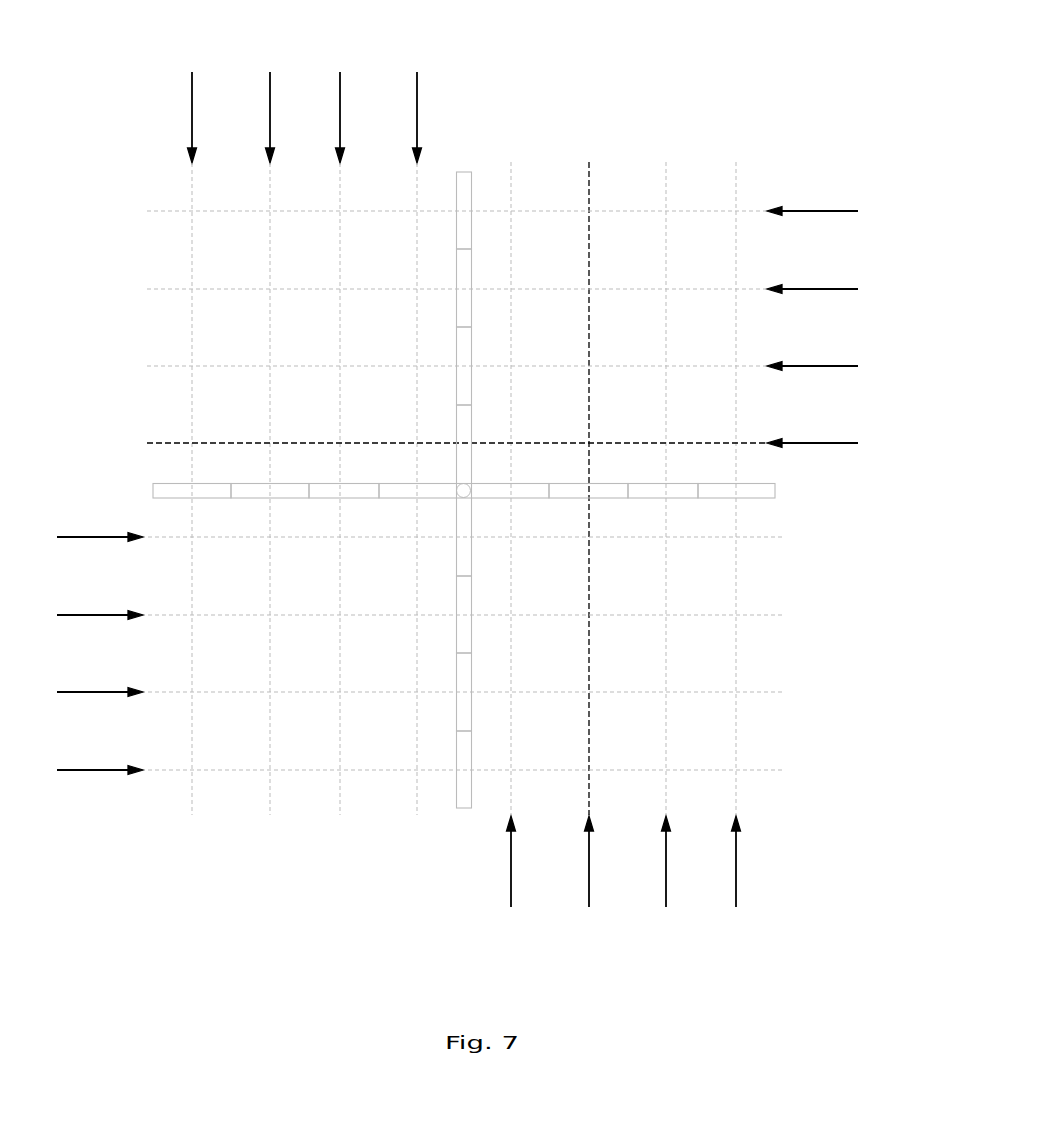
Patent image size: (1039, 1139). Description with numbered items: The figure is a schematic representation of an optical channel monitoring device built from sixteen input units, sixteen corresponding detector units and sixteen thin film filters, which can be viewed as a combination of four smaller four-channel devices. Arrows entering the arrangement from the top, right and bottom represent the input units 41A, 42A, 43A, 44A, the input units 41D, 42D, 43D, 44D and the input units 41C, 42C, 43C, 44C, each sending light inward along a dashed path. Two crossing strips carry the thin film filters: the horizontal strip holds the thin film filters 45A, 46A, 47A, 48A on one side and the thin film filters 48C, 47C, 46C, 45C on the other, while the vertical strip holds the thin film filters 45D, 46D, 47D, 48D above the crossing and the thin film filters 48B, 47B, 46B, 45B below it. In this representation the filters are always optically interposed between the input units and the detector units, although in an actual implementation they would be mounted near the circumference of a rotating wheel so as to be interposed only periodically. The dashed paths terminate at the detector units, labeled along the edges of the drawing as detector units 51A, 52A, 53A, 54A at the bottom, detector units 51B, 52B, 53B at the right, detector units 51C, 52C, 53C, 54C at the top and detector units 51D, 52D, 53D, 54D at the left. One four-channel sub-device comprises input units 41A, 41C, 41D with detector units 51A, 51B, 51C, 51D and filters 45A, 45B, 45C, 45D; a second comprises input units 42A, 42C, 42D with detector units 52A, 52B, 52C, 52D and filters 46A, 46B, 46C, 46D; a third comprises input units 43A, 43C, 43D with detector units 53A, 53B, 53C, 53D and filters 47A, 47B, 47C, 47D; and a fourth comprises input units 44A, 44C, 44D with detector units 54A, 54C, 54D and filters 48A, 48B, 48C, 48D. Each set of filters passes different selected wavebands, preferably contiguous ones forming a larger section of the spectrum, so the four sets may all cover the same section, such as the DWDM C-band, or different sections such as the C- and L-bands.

The input unit 41A is at (198, 104).
The input unit 42A is at (270, 104).
The input unit 43A is at (340, 104).
The input unit 44A is at (418, 104).
The input unit 41C is at (736, 875).
The input unit 42C is at (666, 875).
The input unit 43C is at (587, 875).
The input unit 44C is at (502, 875).
The input unit 41D is at (831, 210).
The input unit 42D is at (831, 288).
The input unit 43D is at (831, 365).
The input unit 44D is at (831, 442).
The thin film filter 45A is at (168, 489).
The thin film filter 46A is at (266, 493).
The thin film filter 47A is at (333, 490).
The thin film filter 48A is at (412, 489).
The thin film filter 45B is at (466, 786).
The thin film filter 46B is at (465, 713).
The thin film filter 47B is at (465, 630).
The thin film filter 48B is at (465, 553).
The thin film filter 45C is at (745, 485).
The thin film filter 46C is at (677, 490).
The thin film filter 47C is at (600, 493).
The thin film filter 48C is at (520, 492).
The thin film filter 45D is at (466, 179).
The thin film filter 46D is at (465, 268).
The thin film filter 47D is at (462, 356).
The thin film filter 48D is at (466, 419).
The detector unit 51A is at (185, 503).
The detector unit 52A is at (270, 502).
The detector unit 53A is at (340, 501).
The detector unit 54A is at (410, 503).
The detector unit 51B is at (485, 770).
The detector unit 52B is at (485, 692).
The detector unit 53B is at (485, 575).
The detector unit 51C is at (736, 475).
The detector unit 52C is at (665, 476).
The detector unit 53C is at (587, 476).
The detector unit 54C is at (510, 476).
The detector unit 51D is at (434, 209).
The detector unit 52D is at (433, 286).
The detector unit 53D is at (430, 365).
The detector unit 54D is at (434, 442).